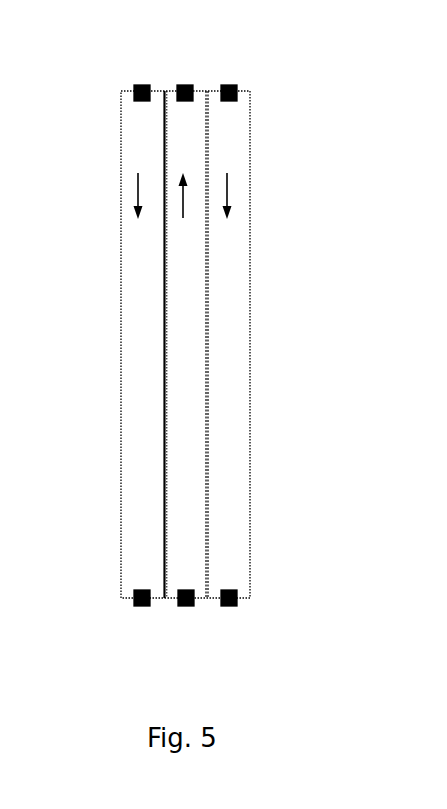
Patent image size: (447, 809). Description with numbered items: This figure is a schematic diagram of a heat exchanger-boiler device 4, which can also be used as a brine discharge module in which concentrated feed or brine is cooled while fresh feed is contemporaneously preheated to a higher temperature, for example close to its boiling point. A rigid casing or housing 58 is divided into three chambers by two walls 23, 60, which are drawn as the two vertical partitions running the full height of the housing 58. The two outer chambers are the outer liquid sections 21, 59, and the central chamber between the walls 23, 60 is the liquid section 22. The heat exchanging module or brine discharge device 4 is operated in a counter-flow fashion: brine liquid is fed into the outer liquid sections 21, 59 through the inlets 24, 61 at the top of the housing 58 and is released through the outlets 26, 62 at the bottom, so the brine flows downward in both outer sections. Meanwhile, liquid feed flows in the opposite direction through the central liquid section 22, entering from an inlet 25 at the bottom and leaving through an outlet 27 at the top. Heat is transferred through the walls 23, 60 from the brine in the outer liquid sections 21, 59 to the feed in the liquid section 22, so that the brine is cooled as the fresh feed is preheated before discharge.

The heat exchanger-boiler device 4 is at (64, 126).
The outer liquid section 21 is at (129, 483).
The liquid section 22 is at (194, 393).
The wall 23 is at (162, 399).
The inlet 24 is at (143, 85).
The inlet 25 is at (184, 607).
The outlet 26 is at (142, 607).
The outlet 27 is at (185, 85).
The rigid casing or housing 58 is at (120, 280).
The outer liquid section 59 is at (238, 276).
The wall 60 is at (207, 514).
The inlet 61 is at (227, 85).
The outlet 62 is at (231, 607).